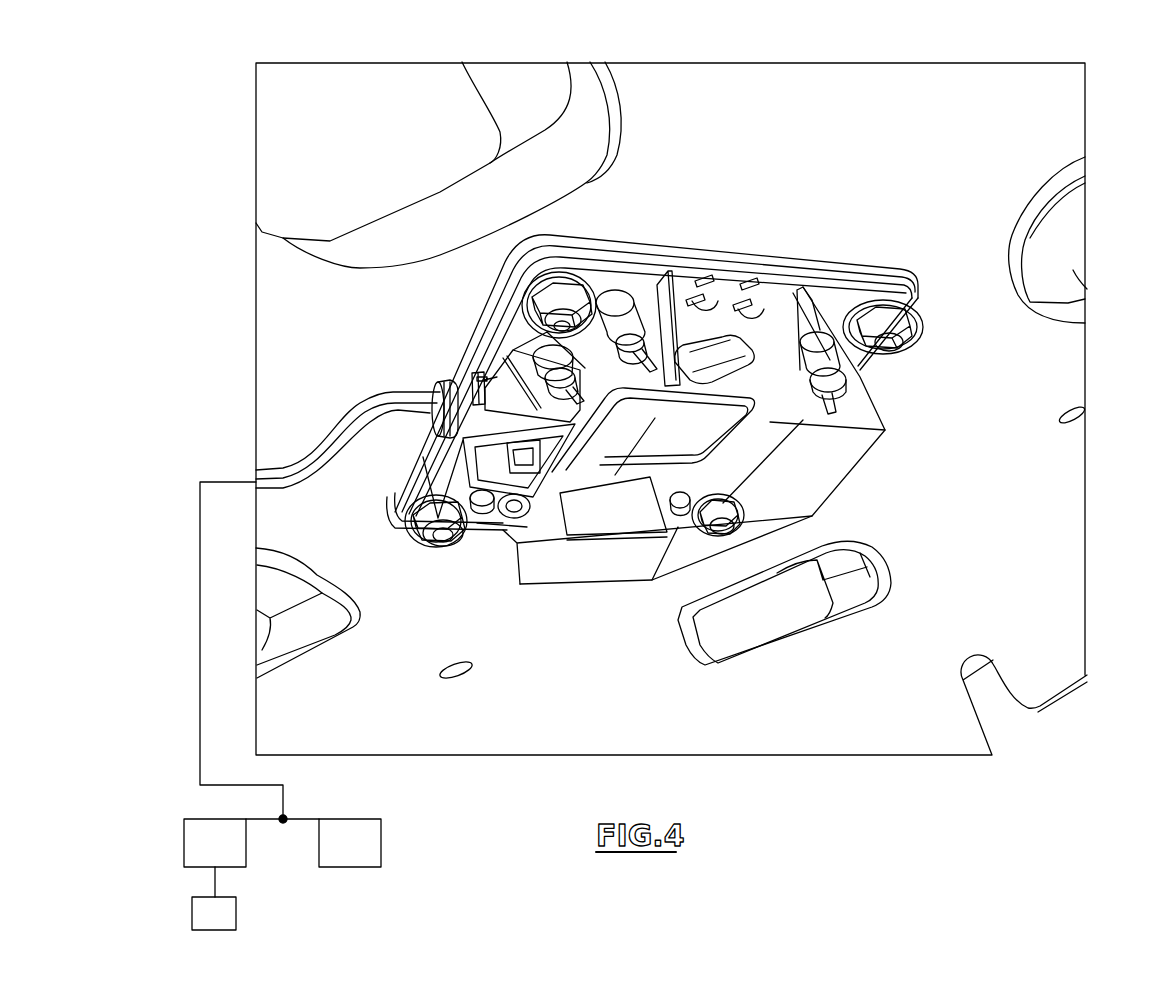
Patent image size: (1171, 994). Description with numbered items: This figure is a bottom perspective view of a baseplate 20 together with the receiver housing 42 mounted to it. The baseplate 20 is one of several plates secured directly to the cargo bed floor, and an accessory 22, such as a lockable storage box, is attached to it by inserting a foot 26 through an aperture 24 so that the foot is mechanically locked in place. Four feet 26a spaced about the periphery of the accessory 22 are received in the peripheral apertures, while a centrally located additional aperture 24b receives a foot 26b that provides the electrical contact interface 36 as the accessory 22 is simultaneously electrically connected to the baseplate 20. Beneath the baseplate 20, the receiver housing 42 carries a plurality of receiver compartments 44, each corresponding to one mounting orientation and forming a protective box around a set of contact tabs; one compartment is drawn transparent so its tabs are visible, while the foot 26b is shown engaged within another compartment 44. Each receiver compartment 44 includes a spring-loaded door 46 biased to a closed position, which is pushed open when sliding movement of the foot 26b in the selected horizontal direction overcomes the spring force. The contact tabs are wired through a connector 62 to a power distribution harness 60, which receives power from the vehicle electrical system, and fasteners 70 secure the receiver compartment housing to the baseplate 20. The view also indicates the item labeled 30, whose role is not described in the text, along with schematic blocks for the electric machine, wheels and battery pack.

The baseplate 20 is at (930, 76).
The accessory 22 is at (513, 84).
The aperture 24 is at (876, 552).
The additional aperture 24b is at (700, 437).
The foot 26 is at (1076, 217).
The feet 26a is at (1074, 271).
The foot 26b is at (622, 463).
The panel edge 30 is at (1067, 117).
The electrical contact interface 36 is at (240, 403).
The receiver housing 42 is at (603, 606).
The receiver compartment 44 is at (848, 455).
The spring-loaded door 46 is at (772, 452).
The power distribution harness 60 is at (323, 441).
The connector 62 is at (463, 380).
The fasteners 70 is at (568, 284).